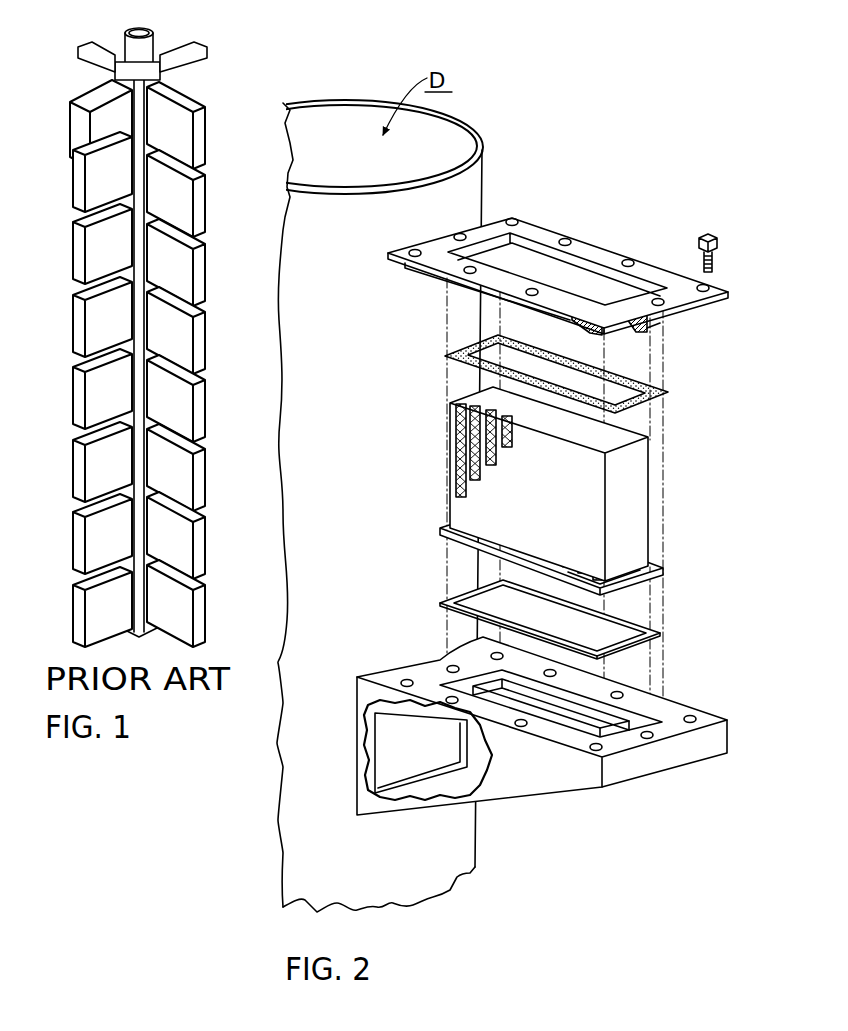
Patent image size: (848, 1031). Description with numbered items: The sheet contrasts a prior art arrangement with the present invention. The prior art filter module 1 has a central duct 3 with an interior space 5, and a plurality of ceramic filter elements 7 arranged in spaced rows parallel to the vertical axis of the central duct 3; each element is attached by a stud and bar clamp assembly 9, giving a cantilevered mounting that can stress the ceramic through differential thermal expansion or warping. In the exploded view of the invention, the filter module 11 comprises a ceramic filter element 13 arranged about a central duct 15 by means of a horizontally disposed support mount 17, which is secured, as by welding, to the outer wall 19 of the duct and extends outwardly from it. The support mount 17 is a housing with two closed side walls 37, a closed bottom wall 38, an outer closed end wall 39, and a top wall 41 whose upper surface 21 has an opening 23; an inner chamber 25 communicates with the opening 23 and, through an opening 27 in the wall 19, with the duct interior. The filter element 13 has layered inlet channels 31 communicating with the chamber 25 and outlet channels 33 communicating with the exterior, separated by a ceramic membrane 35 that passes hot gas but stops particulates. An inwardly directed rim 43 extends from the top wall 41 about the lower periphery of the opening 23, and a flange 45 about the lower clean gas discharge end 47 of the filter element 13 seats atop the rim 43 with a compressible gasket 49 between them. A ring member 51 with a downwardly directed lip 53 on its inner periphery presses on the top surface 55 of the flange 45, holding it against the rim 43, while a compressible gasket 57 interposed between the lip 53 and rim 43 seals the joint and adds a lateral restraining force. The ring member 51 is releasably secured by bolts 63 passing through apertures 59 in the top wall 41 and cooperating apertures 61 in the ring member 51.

In FIG. 1, the filter module 1 is at (213, 107).
In FIG. 1, the central duct 3 is at (137, 273).
In FIG. 1, the interior space 5 is at (163, 52).
In FIG. 1, the ceramic filter elements 7 is at (78, 343).
In FIG. 1, the stud and bar clamp assembly 9 is at (92, 94).
In FIG. 2, the filter module 11 is at (516, 190).
In FIG. 2, the ceramic filter element 13 is at (659, 460).
In FIG. 2, the central duct 15 is at (450, 863).
In FIG. 2, the support mount 17 is at (567, 763).
In FIG. 2, the outer wall 19 is at (336, 461).
In FIG. 2, the upper surface 21 is at (582, 682).
In FIG. 2, the opening 23 is at (575, 718).
In FIG. 2, the inner chamber 25 is at (566, 785).
In FIG. 2, the opening 27 is at (400, 751).
In FIG. 2, the inlet channels 31 is at (455, 417).
In FIG. 2, the outlet channels 33 is at (481, 396).
In FIG. 2, the ceramic membrane 35 is at (470, 470).
In FIG. 2, the side walls 37 is at (452, 795).
In FIG. 2, the bottom wall 38 is at (493, 808).
In FIG. 2, the outer end wall 39 is at (657, 763).
In FIG. 2, the top wall 41 is at (673, 712).
In FIG. 2, the rim 43 is at (620, 716).
In FIG. 2, the flange 45 is at (572, 582).
In FIG. 2, the lower end 47 is at (432, 530).
In FIG. 2, the gasket 49 is at (634, 613).
In FIG. 2, the ring member 51 is at (710, 315).
In FIG. 2, the lip 53 is at (646, 322).
In FIG. 2, the top surface 55 is at (642, 565).
In FIG. 2, the compressible gasket 57 is at (676, 408).
In FIG. 2, the apertures 59 is at (692, 716).
In FIG. 2, the apertures 61 is at (710, 287).
In FIG. 2, the bolts 63 is at (697, 250).